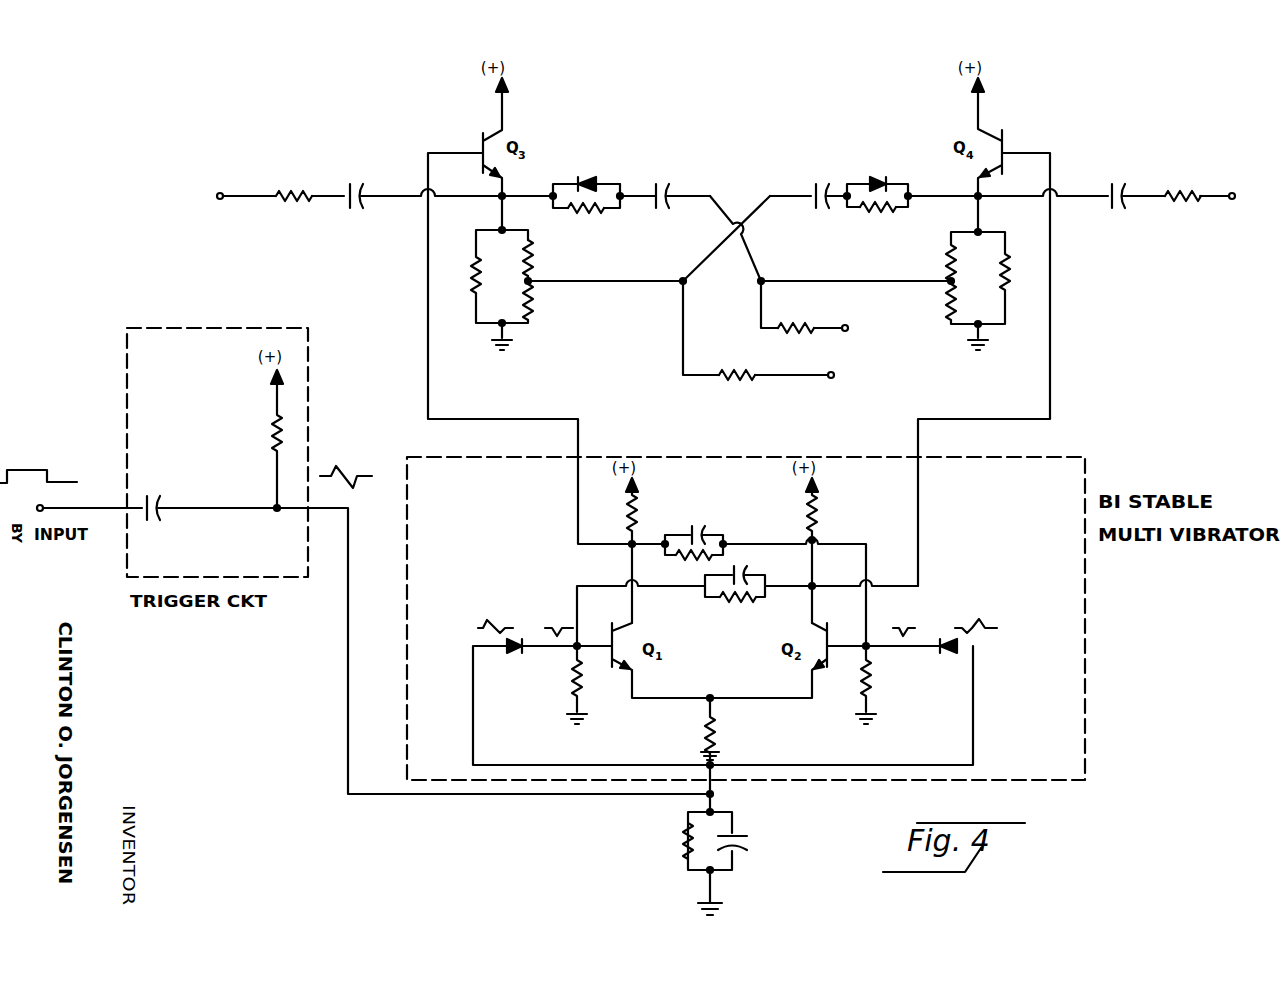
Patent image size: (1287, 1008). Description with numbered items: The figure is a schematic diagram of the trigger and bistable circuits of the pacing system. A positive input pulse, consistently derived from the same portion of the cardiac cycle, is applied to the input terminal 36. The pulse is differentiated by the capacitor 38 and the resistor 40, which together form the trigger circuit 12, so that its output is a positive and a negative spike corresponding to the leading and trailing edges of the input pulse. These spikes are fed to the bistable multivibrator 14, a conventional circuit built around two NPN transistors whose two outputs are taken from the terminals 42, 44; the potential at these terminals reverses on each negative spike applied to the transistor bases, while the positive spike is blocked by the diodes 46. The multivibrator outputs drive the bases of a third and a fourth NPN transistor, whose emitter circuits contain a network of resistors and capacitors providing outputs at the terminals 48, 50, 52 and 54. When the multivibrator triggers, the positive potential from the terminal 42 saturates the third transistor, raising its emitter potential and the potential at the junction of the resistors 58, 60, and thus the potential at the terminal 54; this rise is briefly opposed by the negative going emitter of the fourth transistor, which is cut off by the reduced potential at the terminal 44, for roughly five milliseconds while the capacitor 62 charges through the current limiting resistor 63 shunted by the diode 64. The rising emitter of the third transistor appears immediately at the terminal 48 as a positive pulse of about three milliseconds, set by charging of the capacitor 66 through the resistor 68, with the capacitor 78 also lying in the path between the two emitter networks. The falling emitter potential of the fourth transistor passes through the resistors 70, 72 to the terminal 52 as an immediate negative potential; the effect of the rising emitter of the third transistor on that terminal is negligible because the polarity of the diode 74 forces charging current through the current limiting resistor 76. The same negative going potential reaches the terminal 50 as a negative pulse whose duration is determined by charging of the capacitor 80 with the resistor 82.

The trigger circuit 12 is at (283, 563).
The bistable multivibrator 14 is at (1003, 514).
The input terminal 36 is at (44, 506).
The capacitor 38 is at (155, 495).
The resistor 40 is at (262, 439).
The output terminal 42 is at (628, 547).
The output terminal 44 is at (829, 550).
The diodes 46 is at (520, 655).
The terminal 48 is at (220, 200).
The terminal 50 is at (1250, 197).
The terminal 52 is at (860, 328).
The terminal 54 is at (796, 375).
The resistor 58 is at (545, 258).
The resistor 60 is at (545, 302).
The capacitor 62 is at (823, 182).
The current limiting resistor 63 is at (878, 223).
The diode 64 is at (881, 174).
The capacitor 66 is at (357, 184).
The resistor 68 is at (294, 181).
The resistor 70 is at (959, 278).
The resistor 72 is at (796, 315).
The diode 74 is at (599, 174).
The current limiting resistor 76 is at (598, 212).
The capacitor 78 is at (668, 182).
The capacitor 80 is at (1122, 182).
The resistor 82 is at (1181, 179).